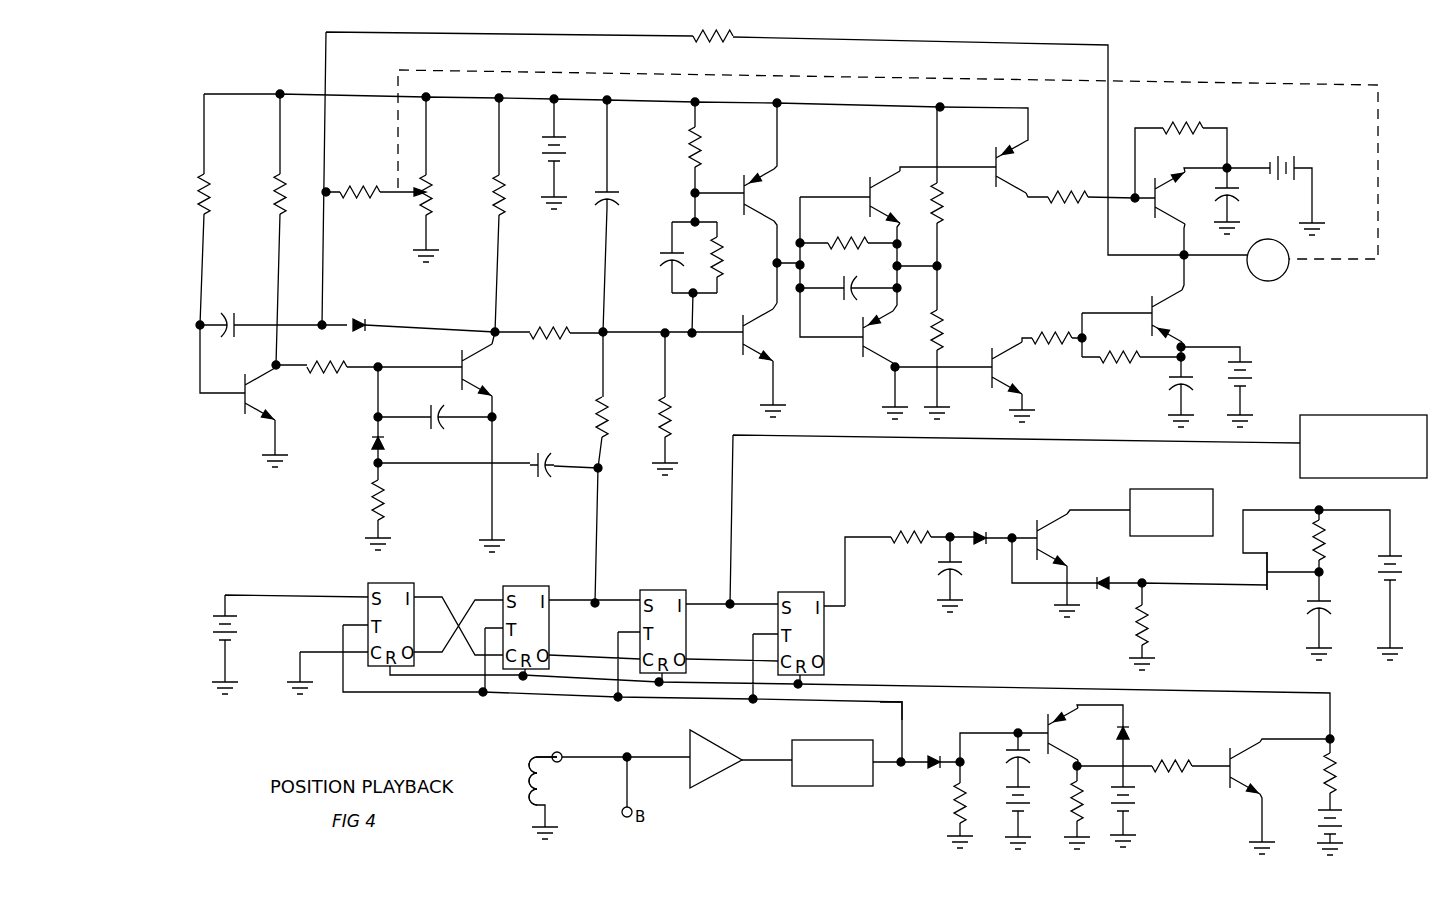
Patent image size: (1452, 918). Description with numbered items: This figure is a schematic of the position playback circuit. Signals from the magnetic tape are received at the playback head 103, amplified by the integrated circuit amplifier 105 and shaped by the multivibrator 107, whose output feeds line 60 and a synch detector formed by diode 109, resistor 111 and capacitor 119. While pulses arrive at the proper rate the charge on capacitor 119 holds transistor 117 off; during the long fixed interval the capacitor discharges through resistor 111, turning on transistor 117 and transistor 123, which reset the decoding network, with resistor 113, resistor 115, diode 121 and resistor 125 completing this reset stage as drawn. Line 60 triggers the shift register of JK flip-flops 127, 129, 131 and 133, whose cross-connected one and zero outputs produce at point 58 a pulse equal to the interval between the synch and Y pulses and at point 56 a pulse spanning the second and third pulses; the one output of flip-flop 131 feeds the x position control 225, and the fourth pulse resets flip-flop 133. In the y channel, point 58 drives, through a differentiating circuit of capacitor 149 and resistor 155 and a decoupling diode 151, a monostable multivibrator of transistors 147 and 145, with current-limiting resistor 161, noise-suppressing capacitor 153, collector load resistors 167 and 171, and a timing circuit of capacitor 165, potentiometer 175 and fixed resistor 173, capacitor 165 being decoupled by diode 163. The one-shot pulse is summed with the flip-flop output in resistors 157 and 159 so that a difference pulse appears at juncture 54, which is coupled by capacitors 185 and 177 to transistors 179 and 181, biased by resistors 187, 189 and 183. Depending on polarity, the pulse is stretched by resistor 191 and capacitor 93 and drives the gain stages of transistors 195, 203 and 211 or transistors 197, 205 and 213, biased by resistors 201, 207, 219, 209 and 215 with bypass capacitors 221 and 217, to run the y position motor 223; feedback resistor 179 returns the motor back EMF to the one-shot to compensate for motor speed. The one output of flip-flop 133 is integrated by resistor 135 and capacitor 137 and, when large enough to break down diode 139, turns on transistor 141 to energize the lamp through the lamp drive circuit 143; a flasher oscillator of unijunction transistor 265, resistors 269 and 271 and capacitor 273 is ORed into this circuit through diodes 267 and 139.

The juncture 54 is at (612, 323).
The point 56 is at (741, 596).
The point 58 is at (605, 595).
The line 60 is at (902, 709).
The capacitor 93 is at (848, 279).
The playback head 103 is at (548, 778).
The integrated circuit amplifier 105 is at (716, 754).
The multivibrator 107 is at (832, 753).
The diode 109 is at (934, 752).
The resistor 111 is at (948, 803).
The resistor 113 is at (1064, 801).
The resistor 115 is at (1172, 757).
The transistor 117 is at (1064, 734).
The capacitor 119 is at (1004, 754).
The diode 121 is at (1142, 735).
The transistor 123 is at (1247, 768).
The resistor 125 is at (1348, 773).
The JK flip-flop 127 is at (391, 616).
The JK flip-flop 129 is at (526, 619).
The JK flip-flop 131 is at (663, 622).
The JK flip-flop 133 is at (801, 624).
The resistor 135 is at (911, 528).
The capacitor 137 is at (929, 566).
The diode 139 is at (982, 528).
The transistor 141 is at (1054, 540).
The lamp drive circuit 143 is at (1171, 502).
The transistor 145 is at (478, 370).
The transistor 147 is at (263, 394).
The capacitor 149 is at (544, 455).
The diode 151 is at (363, 443).
The capacitor 153 is at (430, 406).
The resistor 155 is at (393, 500).
The resistor 157 is at (550, 323).
The resistor 159 is at (617, 417).
The resistor 161 is at (327, 358).
The diode 163 is at (359, 314).
The capacitor 165 is at (230, 314).
The resistor 167 is at (263, 196).
The resistor 171 is at (515, 194).
The fixed resistor 173 is at (360, 183).
The potentiometer 175 is at (438, 195).
The capacitor 177 is at (622, 196).
The transistor and feedback resistor 179 is at (735, 187).
The transistor 181 is at (763, 195).
The resistor 183 is at (733, 257).
The capacitor 185 is at (657, 257).
The resistor 187 is at (712, 147).
The resistor 189 is at (680, 417).
The resistor 191 is at (847, 235).
The transistor 195 is at (888, 197).
The transistor 197 is at (881, 337).
The resistor 201 is at (955, 203).
The transistor 203 is at (1013, 167).
The transistor 205 is at (1010, 368).
The resistor 207 is at (1068, 187).
The resistor 209 is at (1052, 330).
The transistor 211 is at (1172, 198).
The transistor 213 is at (1169, 316).
The resistor 215 is at (1120, 349).
The bypass capacitor 217 is at (1161, 381).
The resistor 219 is at (1183, 119).
The bypass capacitor 221 is at (1247, 194).
The y position motor 223 is at (1283, 260).
The X position control 225 is at (1363, 436).
The unijunction transistor 265 is at (1246, 571).
The diode 267 is at (1104, 574).
The resistor 269 is at (1158, 625).
The resistor 271 is at (1336, 540).
The capacitor 273 is at (1333, 605).